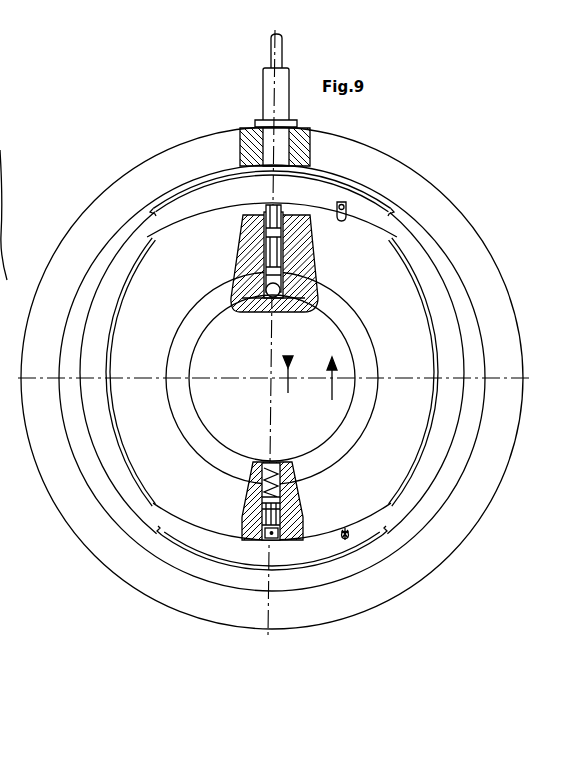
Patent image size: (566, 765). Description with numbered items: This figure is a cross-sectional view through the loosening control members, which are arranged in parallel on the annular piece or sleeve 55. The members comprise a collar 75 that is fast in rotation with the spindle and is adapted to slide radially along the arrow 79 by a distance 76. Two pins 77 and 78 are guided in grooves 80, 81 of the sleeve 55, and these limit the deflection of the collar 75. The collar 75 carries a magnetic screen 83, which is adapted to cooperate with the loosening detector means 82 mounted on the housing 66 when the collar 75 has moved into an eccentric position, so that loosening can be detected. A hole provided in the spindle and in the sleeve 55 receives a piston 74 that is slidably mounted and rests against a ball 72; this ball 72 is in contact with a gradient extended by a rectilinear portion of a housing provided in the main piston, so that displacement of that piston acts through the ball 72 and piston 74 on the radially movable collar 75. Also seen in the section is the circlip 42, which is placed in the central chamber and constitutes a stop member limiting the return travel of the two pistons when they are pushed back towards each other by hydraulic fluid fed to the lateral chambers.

The circlip 42 is at (38, 637).
The sleeve 55 is at (163, 317).
The housing 66 is at (412, 185).
The ball 72 is at (277, 292).
The piston 74 is at (285, 262).
The collar 75 is at (153, 503).
The distance 76 is at (305, 398).
The pin 77 is at (343, 200).
The pin 78 is at (350, 536).
The arrow 79 is at (340, 377).
The groove 80 is at (322, 268).
The groove 81 is at (333, 548).
The loosening detector means 82 is at (277, 100).
The magnetic screen 83 is at (177, 197).